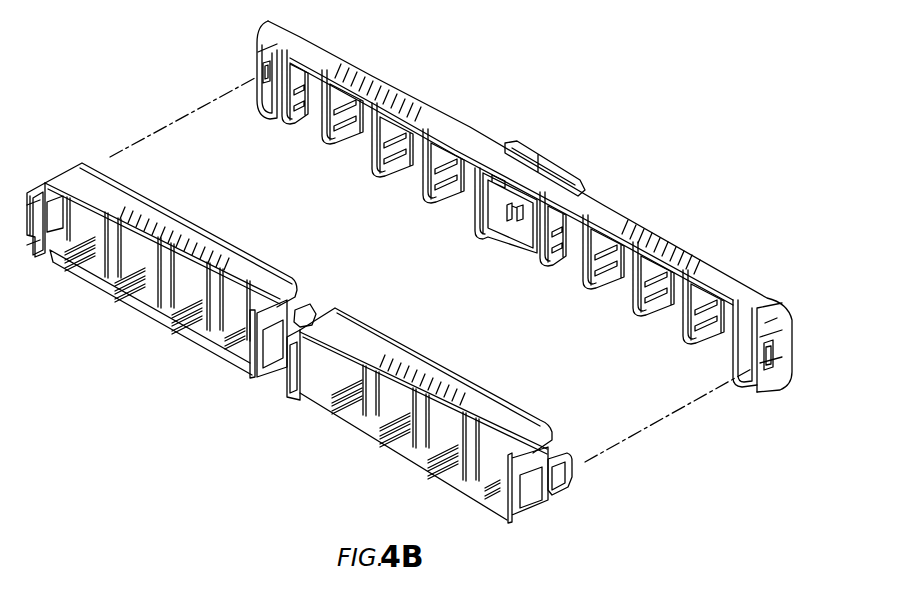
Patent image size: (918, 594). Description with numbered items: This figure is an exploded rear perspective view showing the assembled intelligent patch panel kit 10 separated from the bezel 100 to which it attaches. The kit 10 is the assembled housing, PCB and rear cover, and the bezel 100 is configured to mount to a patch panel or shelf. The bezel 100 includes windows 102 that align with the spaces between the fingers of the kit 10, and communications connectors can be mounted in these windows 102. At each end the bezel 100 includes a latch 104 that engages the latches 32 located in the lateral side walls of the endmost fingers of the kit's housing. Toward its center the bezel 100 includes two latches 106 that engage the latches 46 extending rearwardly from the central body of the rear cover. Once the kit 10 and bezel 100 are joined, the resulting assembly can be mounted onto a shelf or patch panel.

The intelligent patch panel kit 10 is at (497, 244).
The latch 32 is at (263, 70).
The latch 46 is at (518, 214).
The bezel 100 is at (437, 435).
The window 102 is at (407, 402).
The latch 104 is at (45, 186).
The latch 106 is at (312, 312).